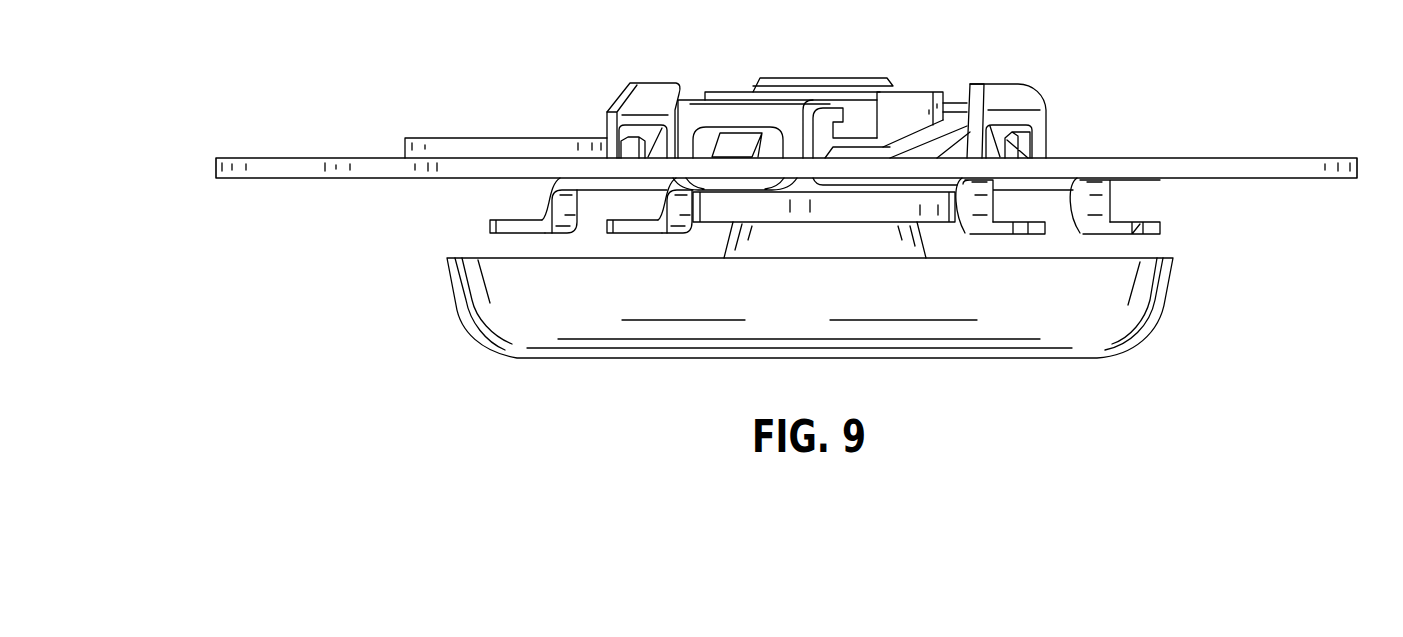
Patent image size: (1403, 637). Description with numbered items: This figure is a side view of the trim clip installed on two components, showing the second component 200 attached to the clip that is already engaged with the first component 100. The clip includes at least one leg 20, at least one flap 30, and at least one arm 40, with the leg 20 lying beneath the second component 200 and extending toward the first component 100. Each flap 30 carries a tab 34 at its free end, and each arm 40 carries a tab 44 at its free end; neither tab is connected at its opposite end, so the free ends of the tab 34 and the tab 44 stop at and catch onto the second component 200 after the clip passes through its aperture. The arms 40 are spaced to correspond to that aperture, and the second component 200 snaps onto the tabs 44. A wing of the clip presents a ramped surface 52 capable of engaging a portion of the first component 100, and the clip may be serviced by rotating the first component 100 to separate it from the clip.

The leg 20 is at (1137, 226).
The flap 30 is at (697, 102).
The tab 34 is at (737, 137).
The arm 40 is at (643, 103).
The tab 44 is at (1017, 150).
The ramped surface 52 is at (940, 137).
The first component 100 is at (1140, 283).
The second component 200 is at (1230, 170).